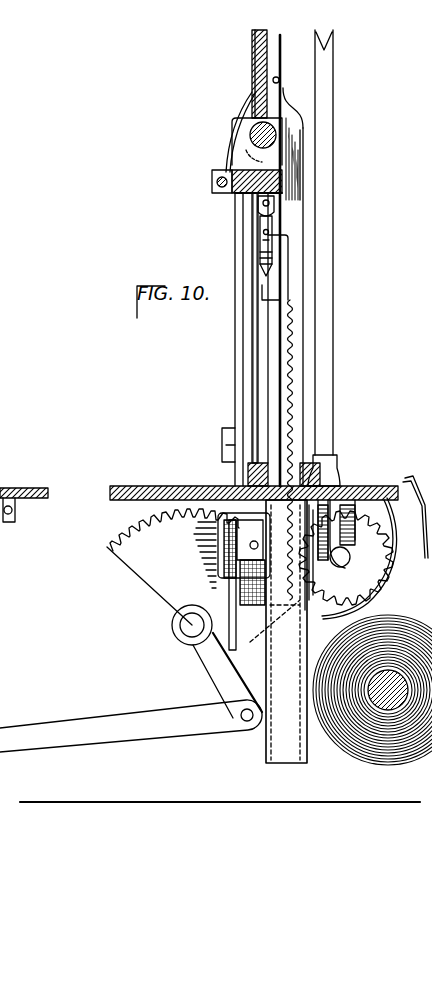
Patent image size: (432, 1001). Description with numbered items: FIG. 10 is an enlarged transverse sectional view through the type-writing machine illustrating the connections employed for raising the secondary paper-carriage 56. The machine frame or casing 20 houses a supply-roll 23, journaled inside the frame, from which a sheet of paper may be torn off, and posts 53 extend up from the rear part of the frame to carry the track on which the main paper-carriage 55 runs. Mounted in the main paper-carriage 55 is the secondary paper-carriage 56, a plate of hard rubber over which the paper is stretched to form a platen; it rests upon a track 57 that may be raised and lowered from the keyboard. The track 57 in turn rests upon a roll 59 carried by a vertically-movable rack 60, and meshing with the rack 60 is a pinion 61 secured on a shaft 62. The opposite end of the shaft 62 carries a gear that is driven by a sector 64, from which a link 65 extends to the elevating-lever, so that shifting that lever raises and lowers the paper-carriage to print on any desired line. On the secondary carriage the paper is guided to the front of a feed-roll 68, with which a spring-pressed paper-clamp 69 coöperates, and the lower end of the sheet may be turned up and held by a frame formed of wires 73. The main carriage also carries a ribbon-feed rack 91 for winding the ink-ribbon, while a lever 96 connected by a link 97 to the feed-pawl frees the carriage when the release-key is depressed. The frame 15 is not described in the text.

The frame 15 is at (6, 385).
The machine frame or casing 20 is at (36, 490).
The supply-roll 23 is at (360, 747).
The posts 53 is at (328, 373).
The main paper-carriage 55 is at (302, 313).
The secondary paper-carriage 56 is at (272, 58).
The track 57 is at (276, 207).
The roll 59 is at (262, 238).
The rack 60 is at (270, 395).
The pinion 61 is at (372, 557).
The shaft 62 is at (378, 575).
The sector 64 is at (172, 625).
The link 65 is at (88, 725).
The feed-roll 68 is at (278, 138).
The spring-pressed paper-clamp 69 is at (240, 143).
The wires 73 is at (285, 80).
The ribbon-feed rack 91 is at (224, 443).
The lever 96 is at (228, 610).
The link 97 is at (222, 547).